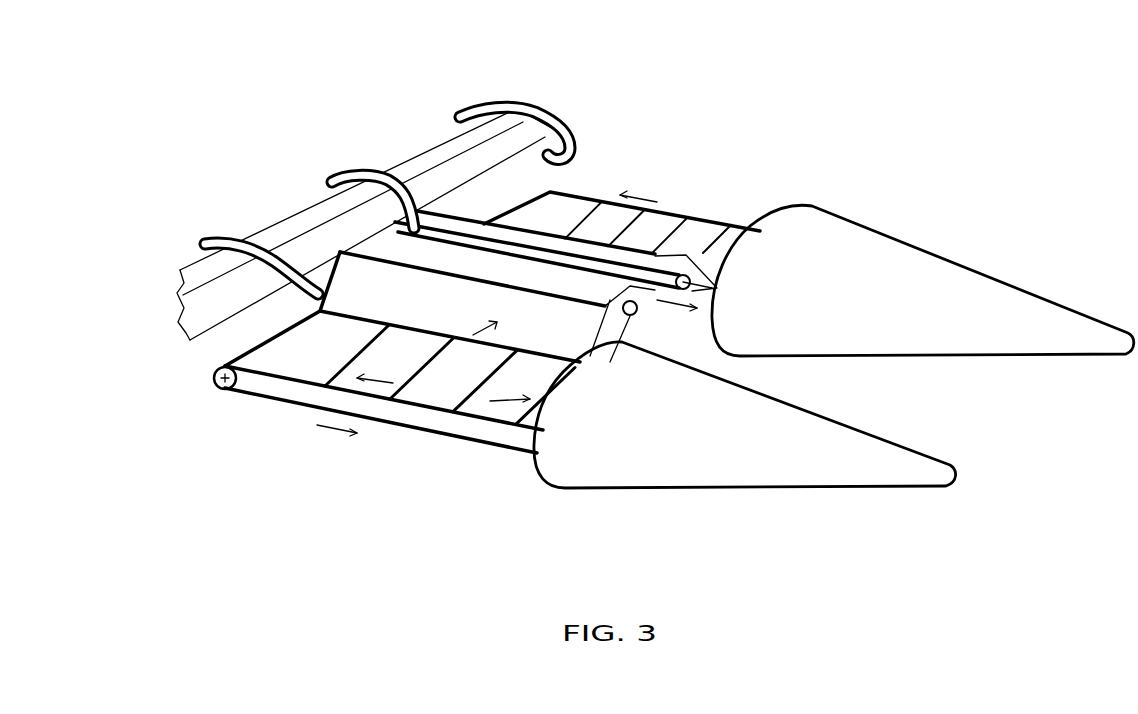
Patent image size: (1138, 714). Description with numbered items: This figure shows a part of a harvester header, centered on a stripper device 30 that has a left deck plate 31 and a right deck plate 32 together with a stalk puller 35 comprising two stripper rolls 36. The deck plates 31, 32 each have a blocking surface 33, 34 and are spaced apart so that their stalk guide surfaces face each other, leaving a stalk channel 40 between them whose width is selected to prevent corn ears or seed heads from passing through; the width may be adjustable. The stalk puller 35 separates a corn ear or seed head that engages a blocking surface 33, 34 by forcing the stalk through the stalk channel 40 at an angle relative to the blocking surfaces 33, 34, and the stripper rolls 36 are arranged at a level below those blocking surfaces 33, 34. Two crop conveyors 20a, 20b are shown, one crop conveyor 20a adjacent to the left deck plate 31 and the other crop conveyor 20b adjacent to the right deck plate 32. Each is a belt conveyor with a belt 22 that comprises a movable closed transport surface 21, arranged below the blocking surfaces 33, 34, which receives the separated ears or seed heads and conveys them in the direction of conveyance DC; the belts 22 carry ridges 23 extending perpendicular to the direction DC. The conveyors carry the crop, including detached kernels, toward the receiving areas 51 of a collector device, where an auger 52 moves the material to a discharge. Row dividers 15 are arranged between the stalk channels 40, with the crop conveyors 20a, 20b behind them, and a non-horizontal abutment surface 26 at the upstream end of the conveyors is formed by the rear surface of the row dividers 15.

The row dividers 15 is at (1047, 320).
The crop conveyor 20a is at (742, 224).
The crop conveyor 20b is at (258, 446).
The transport surface 21 is at (324, 378).
The belt 22 is at (212, 386).
The ridges 23 is at (245, 393).
The abutment surface 26 is at (483, 447).
The stripper device 30 is at (513, 270).
The left deck plate 31 is at (519, 226).
The right deck plate 32 is at (378, 238).
The blocking surface 33 is at (665, 270).
The blocking surface 34 is at (443, 335).
The stalk puller 35 is at (649, 335).
The stripper rolls 36 is at (697, 283).
The stalk channel 40 is at (417, 221).
The receiving areas 51 is at (270, 321).
The auger 52 is at (440, 142).
The direction of conveyance DC is at (652, 250).